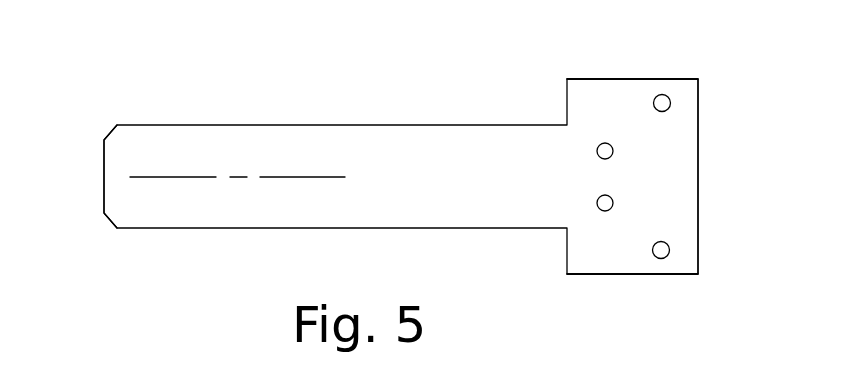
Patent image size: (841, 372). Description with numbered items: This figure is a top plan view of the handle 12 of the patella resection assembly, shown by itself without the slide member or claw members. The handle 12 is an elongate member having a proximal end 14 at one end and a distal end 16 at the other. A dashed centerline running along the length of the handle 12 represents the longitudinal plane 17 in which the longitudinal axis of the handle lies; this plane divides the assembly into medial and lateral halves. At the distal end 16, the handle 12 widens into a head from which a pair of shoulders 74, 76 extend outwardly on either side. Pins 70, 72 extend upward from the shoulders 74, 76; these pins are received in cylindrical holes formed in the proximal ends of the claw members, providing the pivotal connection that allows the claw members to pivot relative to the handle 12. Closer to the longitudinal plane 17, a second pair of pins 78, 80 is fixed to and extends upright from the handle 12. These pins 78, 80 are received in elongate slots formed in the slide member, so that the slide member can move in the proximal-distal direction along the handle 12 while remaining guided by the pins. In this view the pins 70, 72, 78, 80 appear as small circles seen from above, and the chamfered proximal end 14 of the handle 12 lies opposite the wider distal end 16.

The handle 12 is at (401, 176).
The proximal end 14 is at (88, 176).
The distal end 16 is at (652, 176).
The longitudinal plane 17 is at (237, 227).
The pin 70 is at (663, 78).
The pin 72 is at (663, 278).
The shoulder 74 is at (632, 57).
The shoulder 76 is at (632, 297).
The pin 78 is at (629, 155).
The pin 80 is at (629, 206).